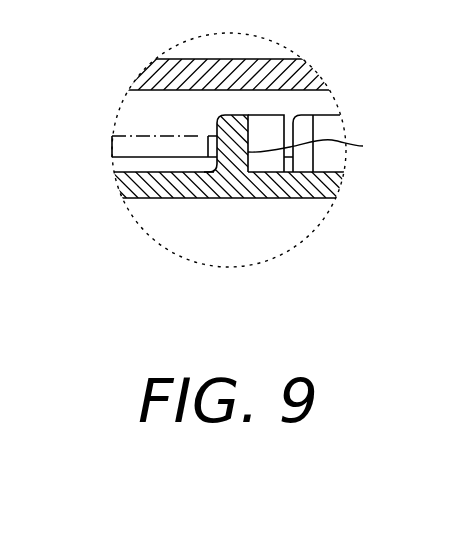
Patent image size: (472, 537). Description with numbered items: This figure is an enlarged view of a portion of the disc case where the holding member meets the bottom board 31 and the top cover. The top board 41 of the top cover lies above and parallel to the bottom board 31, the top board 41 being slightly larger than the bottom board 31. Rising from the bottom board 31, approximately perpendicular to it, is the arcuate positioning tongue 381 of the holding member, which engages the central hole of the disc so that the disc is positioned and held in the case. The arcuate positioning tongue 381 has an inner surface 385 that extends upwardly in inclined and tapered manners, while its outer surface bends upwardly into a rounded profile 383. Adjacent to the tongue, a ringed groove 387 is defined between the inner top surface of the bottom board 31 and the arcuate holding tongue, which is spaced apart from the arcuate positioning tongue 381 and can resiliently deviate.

The bottom board 31 is at (118, 184).
The top board 41 is at (300, 75).
The arcuate positioning tongue 381 is at (230, 148).
The rounded profile 383 is at (220, 118).
The inner surface 385 is at (336, 149).
The ringed groove 387 is at (207, 173).